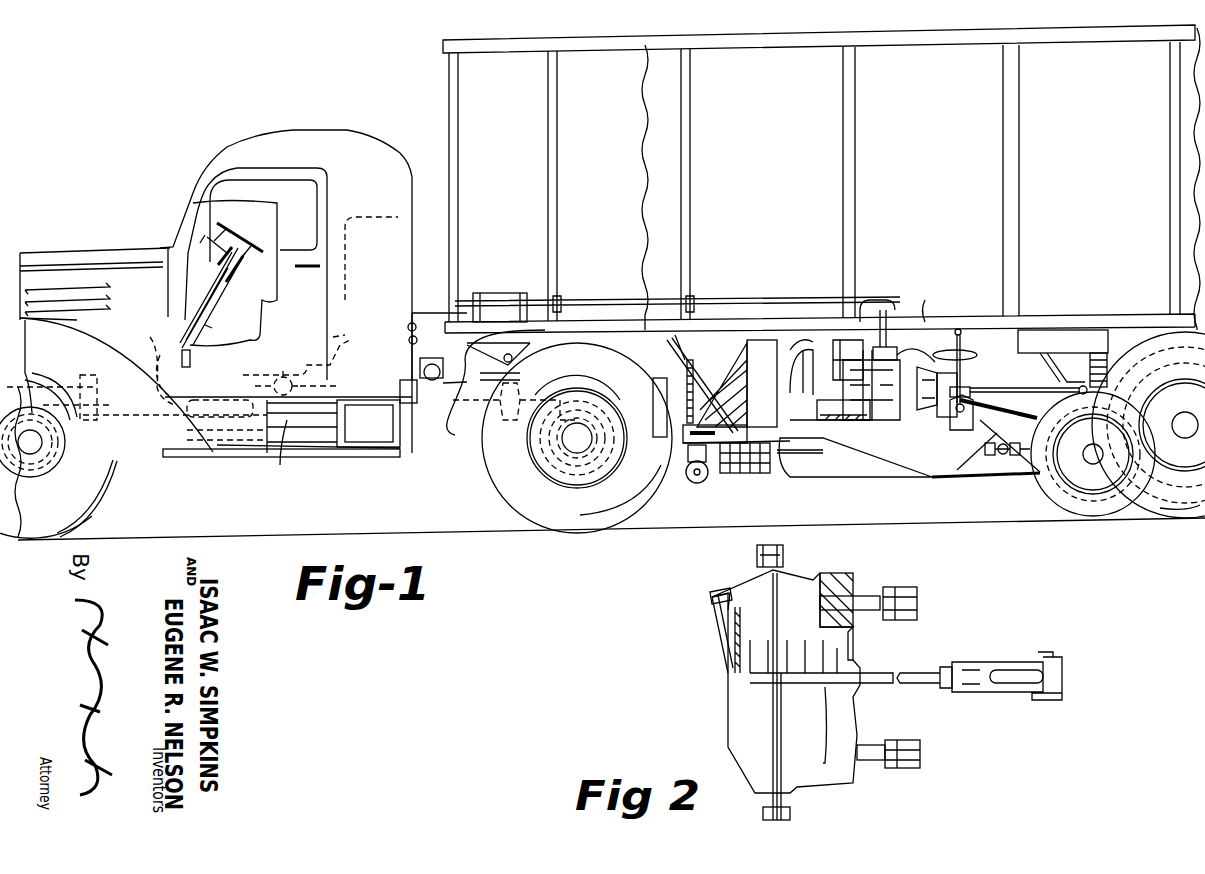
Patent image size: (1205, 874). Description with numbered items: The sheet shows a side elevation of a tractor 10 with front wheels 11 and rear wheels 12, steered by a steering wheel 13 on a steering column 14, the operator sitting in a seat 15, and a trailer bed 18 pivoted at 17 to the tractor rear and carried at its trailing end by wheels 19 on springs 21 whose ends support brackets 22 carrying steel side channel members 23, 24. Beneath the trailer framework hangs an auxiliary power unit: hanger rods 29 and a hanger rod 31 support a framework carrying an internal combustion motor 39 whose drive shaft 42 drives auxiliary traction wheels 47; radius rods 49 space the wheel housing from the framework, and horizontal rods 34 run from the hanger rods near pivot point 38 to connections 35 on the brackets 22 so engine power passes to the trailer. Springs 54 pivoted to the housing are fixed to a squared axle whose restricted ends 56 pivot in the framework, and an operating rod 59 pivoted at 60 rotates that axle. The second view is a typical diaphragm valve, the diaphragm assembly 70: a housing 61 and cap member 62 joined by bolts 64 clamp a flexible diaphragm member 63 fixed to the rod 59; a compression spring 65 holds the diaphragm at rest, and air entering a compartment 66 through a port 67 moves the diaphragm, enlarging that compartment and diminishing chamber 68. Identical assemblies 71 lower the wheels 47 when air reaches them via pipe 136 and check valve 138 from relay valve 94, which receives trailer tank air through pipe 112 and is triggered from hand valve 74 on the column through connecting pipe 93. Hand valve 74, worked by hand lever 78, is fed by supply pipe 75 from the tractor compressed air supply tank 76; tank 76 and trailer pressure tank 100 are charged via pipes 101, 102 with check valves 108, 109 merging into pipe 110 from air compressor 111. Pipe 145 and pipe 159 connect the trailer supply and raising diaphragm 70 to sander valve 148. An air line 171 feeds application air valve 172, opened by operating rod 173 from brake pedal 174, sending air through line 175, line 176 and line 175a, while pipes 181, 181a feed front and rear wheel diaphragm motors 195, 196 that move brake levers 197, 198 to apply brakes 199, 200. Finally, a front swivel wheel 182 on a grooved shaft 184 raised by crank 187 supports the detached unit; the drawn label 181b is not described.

In FIG. 1, the tractor 10 is at (130, 252).
In FIG. 1, the front wheels 11 is at (117, 464).
In FIG. 1, the rear wheels 12 is at (500, 488).
In FIG. 1, the steering wheel 13 is at (232, 236).
In FIG. 1, the steering column 14 is at (214, 300).
In FIG. 1, the seat 15 is at (303, 300).
In FIG. 1, the pivot 17 is at (512, 370).
In FIG. 1, the trailer bed 18 is at (821, 177).
In FIG. 1, the wheels 19 is at (1160, 330).
In FIG. 1, the springs 21 is at (1112, 358).
In FIG. 1, the brackets 22 is at (1068, 378).
In FIG. 1, the side channel member 23 is at (1063, 338).
In FIG. 1, the side channel member 24 is at (1090, 313).
In FIG. 1, the hanger rods 29 is at (965, 346).
In FIG. 1, the hanger rod 31 is at (667, 352).
In FIG. 1, the rods 34 is at (1035, 388).
In FIG. 1, the connection 35 is at (1083, 396).
In FIG. 1, the pivot point 38 is at (965, 421).
In FIG. 1, the internal combustion motor 39 is at (842, 468).
In FIG. 1, the drive shaft 42 is at (1022, 474).
In FIG. 1, the wheels 47 is at (1045, 505).
In FIG. 1, the radius rods 49 is at (982, 476).
In FIG. 1, the springs 54 is at (1005, 402).
In FIG. 1, the restricted ends 56 is at (1000, 440).
In FIG. 1, the operating rod 59 is at (548, 390).
In FIG. 2, the operating rod 59 is at (908, 672).
In FIG. 2, the pivot 60 is at (1048, 655).
In FIG. 2, the housing 61 is at (834, 589).
In FIG. 2, the cap member 62 is at (715, 635).
In FIG. 2, the flexible diaphragm member 63 is at (753, 600).
In FIG. 2, the bolts 64 is at (783, 557).
In FIG. 2, the compression spring 65 is at (812, 635).
In FIG. 2, the compartment 66 is at (712, 608).
In FIG. 2, the port 67 is at (718, 581).
In FIG. 2, the chamber 68 is at (859, 605).
In FIG. 1, the diaphragm assembly 70 is at (978, 356).
In FIG. 2, the diaphragm assembly 70 is at (726, 705).
In FIG. 1, the diaphragm assemblies 71 is at (940, 417).
In FIG. 1, the hand valve 74 is at (244, 260).
In FIG. 1, the supply pipe 75 is at (230, 279).
In FIG. 1, the compressed air supply tank 76 is at (333, 423).
In FIG. 1, the hand lever 78 is at (207, 231).
In FIG. 1, the connecting pipe 93 is at (413, 362).
In FIG. 1, the relay valve 94 is at (847, 350).
In FIG. 1, the pressure tank 100 is at (500, 307).
In FIG. 1, the pipe 101 is at (452, 400).
In FIG. 1, the pipe 102 is at (448, 312).
In FIG. 1, the check valve 108 is at (400, 388).
In FIG. 1, the check valve 109 is at (407, 327).
In FIG. 1, the pipe 110 is at (409, 342).
In FIG. 1, the air compressor 111 is at (434, 362).
In FIG. 1, the pipe 112 is at (773, 300).
In FIG. 1, the pipe 136 is at (844, 385).
In FIG. 1, the check valve 138 is at (910, 415).
In FIG. 1, the pipe 145 is at (884, 312).
In FIG. 1, the valve 148 is at (884, 350).
In FIG. 1, the pipe 159 is at (944, 304).
In FIG. 1, the air line 171 is at (292, 451).
In FIG. 1, the application air valve 172 is at (293, 380).
In FIG. 1, the operating rod 173 is at (220, 411).
In FIG. 1, the brake pedal 174 is at (190, 358).
In FIG. 1, the line 175 is at (293, 362).
In FIG. 1, the line 175a is at (350, 336).
In FIG. 1, the line 176 is at (222, 329).
In FIG. 1, the pipe 181 is at (118, 415).
In FIG. 1, the pipe 181a is at (455, 410).
In FIG. 1, the brake line 181b is at (336, 378).
In FIG. 1, the front swivel wheel 182 is at (693, 485).
In FIG. 1, the grooved shaft 184 is at (732, 383).
In FIG. 1, the crank 187 is at (683, 434).
In FIG. 1, the front wheel diaphragm motor 195 is at (88, 378).
In FIG. 1, the rear wheel diaphragm motor 196 is at (513, 421).
In FIG. 1, the brake lever 197 is at (58, 438).
In FIG. 1, the brake lever 198 is at (578, 395).
In FIG. 1, the brakes 199 is at (40, 485).
In FIG. 1, the brakes 200 is at (558, 465).